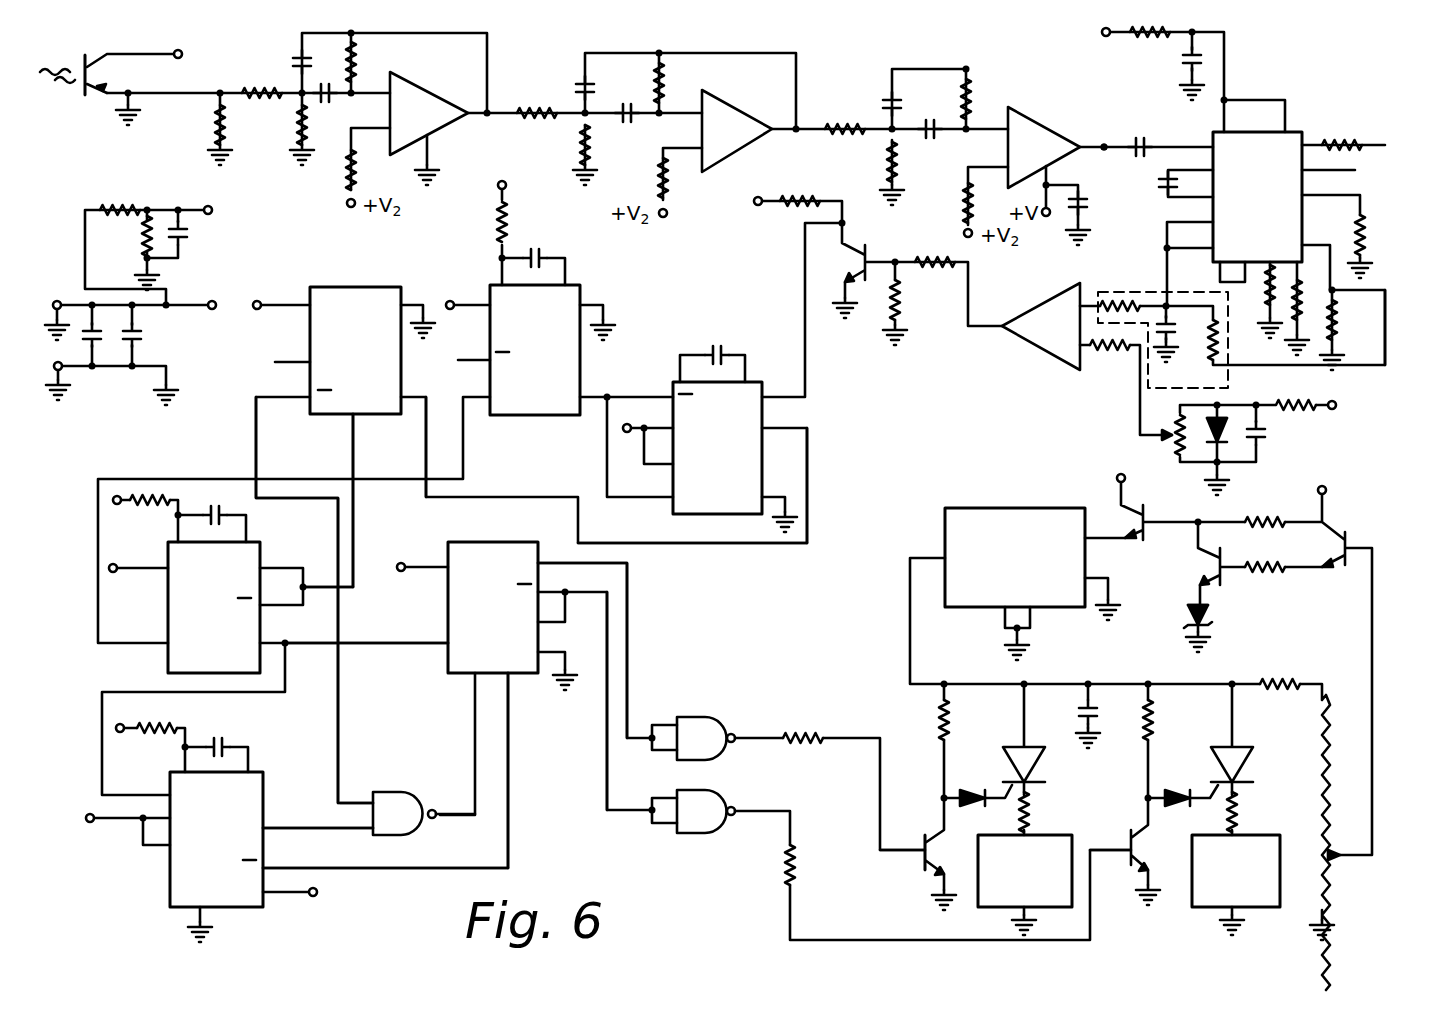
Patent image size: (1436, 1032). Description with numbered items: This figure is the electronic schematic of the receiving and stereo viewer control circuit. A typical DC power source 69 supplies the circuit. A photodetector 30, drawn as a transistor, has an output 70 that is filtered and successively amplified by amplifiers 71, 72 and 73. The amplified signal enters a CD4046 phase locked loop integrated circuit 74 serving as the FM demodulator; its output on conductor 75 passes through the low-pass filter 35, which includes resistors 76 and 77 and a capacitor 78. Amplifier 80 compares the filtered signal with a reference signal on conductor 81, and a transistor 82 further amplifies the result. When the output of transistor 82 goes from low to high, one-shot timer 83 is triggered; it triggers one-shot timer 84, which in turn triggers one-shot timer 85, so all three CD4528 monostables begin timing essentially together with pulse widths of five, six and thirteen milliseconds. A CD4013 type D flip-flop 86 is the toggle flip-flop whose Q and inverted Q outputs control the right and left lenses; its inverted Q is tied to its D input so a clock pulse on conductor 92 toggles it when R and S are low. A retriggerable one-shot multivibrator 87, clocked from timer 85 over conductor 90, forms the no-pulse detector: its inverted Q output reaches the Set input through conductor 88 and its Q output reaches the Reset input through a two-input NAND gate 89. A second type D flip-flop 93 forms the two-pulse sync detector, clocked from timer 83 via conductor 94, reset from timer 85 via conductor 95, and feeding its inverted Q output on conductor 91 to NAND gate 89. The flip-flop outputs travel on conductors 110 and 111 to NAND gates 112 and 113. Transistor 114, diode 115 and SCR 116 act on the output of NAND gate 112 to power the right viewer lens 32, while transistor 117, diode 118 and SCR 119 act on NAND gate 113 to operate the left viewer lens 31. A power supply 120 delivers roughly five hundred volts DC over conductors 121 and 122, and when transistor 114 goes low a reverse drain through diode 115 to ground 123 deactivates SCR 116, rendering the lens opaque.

The photodetector 30 is at (95, 100).
The left viewer lens 31 is at (1248, 835).
The right viewer lens 32 is at (1070, 835).
The low-pass filter 35 is at (1150, 292).
The DC power source 69 is at (158, 195).
The photodetector output 70 is at (110, 86).
The amplifier 71 is at (436, 130).
The amplifier 72 is at (745, 146).
The amplifier 73 is at (1039, 130).
The phase locked loop integrated circuit 74 is at (1292, 142).
The conductor 75 is at (1386, 322).
The resistor 76 is at (1118, 300).
The resistor 77 is at (1174, 334).
The capacitor 78 is at (1228, 338).
The amplifier 80 is at (1060, 297).
The conductor 81 is at (1140, 408).
The transistor 82 is at (870, 262).
The one-shot timer 83 is at (752, 390).
The one-shot timer 84 is at (572, 296).
The one-shot timer 85 is at (252, 554).
The type D flip-flop 86 is at (486, 548).
The retriggerable one-shot multivibrator 87 is at (175, 872).
The conductor 88 is at (508, 742).
The NAND gate 89 is at (383, 792).
The conductor 90 is at (150, 692).
The conductor 91 is at (256, 430).
The conductor 92 is at (420, 646).
The type D flip-flop 93 is at (343, 295).
The conductor 94 is at (428, 414).
The conductor 95 is at (355, 505).
The conductor 110 is at (628, 620).
The conductor 111 is at (607, 782).
The NAND gate 112 is at (700, 717).
The NAND gate 113 is at (707, 790).
The transistor 114 is at (925, 835).
The diode 115 is at (968, 790).
The SCR 116 is at (1034, 765).
The transistor 117 is at (1125, 834).
The diode 118 is at (1174, 790).
The SCR 119 is at (1240, 748).
The power supply 120 is at (985, 505).
The conductor 121 is at (908, 605).
The conductor 122 is at (1240, 683).
The ground 123 is at (935, 893).